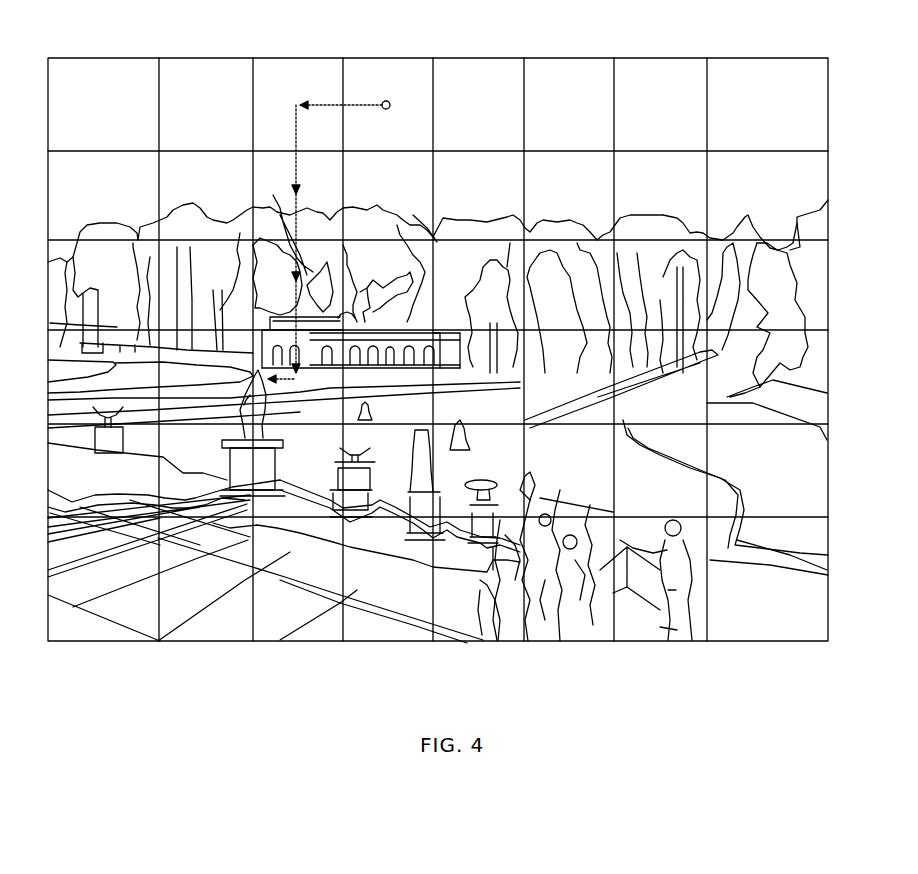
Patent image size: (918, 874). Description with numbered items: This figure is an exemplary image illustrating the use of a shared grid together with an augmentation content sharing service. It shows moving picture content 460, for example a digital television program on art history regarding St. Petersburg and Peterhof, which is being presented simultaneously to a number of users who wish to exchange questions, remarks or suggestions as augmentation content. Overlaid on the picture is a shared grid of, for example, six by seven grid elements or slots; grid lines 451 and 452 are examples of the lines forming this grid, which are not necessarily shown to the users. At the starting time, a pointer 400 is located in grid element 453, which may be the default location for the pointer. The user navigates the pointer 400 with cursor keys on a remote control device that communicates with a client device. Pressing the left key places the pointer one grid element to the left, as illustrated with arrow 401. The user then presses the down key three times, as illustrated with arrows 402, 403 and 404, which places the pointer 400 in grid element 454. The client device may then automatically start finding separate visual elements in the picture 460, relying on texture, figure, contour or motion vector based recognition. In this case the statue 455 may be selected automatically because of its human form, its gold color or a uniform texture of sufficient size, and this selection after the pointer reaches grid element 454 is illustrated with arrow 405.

The pointer 400 is at (393, 103).
The arrow 401 is at (337, 103).
The arrow 402 is at (296, 130).
The arrow 403 is at (293, 205).
The arrow 404 is at (278, 313).
The arrow 405 is at (301, 394).
The grid line 451 is at (707, 75).
The grid line 452 is at (740, 151).
The grid element 453 is at (398, 58).
The grid element 454 is at (366, 416).
The statue 455 is at (232, 432).
The moving picture content 460 is at (298, 641).